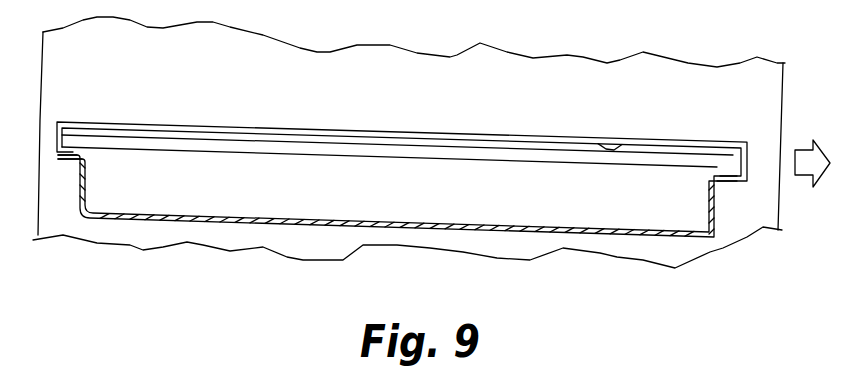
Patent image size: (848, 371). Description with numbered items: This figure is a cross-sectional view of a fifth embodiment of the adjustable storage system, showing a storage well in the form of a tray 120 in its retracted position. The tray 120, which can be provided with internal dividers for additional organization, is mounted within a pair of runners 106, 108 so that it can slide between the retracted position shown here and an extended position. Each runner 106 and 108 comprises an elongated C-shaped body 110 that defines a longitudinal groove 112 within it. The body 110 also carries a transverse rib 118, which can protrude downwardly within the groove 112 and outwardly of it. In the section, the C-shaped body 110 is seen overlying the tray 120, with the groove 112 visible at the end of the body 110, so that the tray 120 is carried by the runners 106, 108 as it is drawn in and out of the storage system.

The runner 106 is at (289, 128).
The runner 108 is at (397, 145).
The elongated C-shaped body 110 is at (482, 134).
The longitudinal groove 112 is at (58, 158).
The transverse rib 118 is at (621, 148).
The tray 120 is at (436, 223).